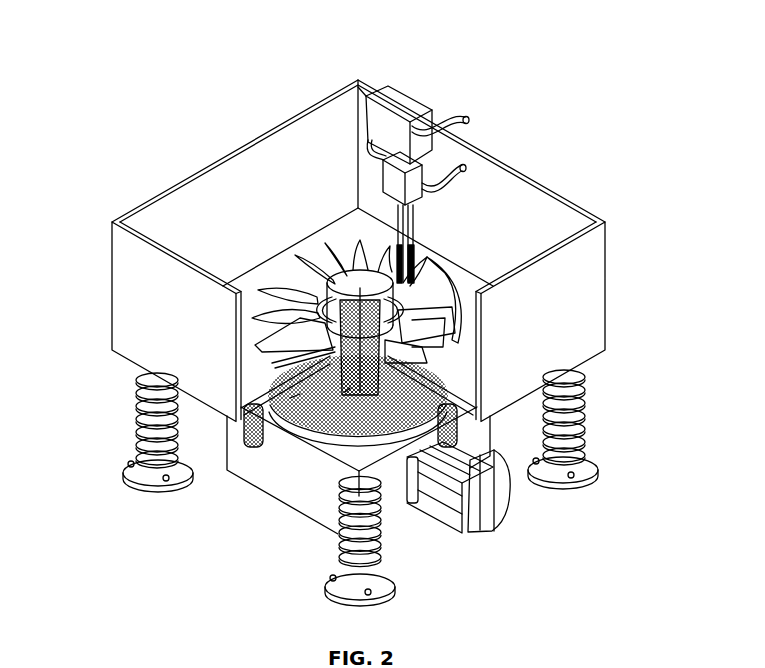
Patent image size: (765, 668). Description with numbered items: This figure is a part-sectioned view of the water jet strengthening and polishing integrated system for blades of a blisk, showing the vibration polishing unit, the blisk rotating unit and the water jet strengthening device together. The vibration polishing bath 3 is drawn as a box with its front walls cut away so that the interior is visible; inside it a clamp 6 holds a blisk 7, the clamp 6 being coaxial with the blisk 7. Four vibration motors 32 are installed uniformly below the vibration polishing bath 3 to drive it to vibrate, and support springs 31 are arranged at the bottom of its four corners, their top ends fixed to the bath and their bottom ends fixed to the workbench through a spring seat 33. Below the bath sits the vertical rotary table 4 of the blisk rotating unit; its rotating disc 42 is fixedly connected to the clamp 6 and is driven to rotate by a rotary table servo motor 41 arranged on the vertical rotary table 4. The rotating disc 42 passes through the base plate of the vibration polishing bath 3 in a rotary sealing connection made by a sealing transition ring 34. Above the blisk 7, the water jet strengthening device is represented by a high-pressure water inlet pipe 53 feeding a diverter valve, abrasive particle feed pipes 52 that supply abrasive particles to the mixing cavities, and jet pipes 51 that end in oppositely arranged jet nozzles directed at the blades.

The vibration polishing bath 3 is at (160, 313).
The vertical rotary table 4 is at (315, 477).
The clamp 6 is at (300, 250).
The blisk 7 is at (455, 289).
The support spring 31 is at (583, 435).
The vibration motor 32 is at (505, 480).
The spring seat 33 is at (578, 471).
The sealing transition ring 34 is at (293, 397).
The rotary table servo motor 41 is at (425, 505).
The rotating disc 42 is at (348, 395).
The jet pipe 51 is at (398, 227).
The abrasive particle feed pipe 52 is at (358, 105).
The high-pressure water inlet pipe 53 is at (466, 120).